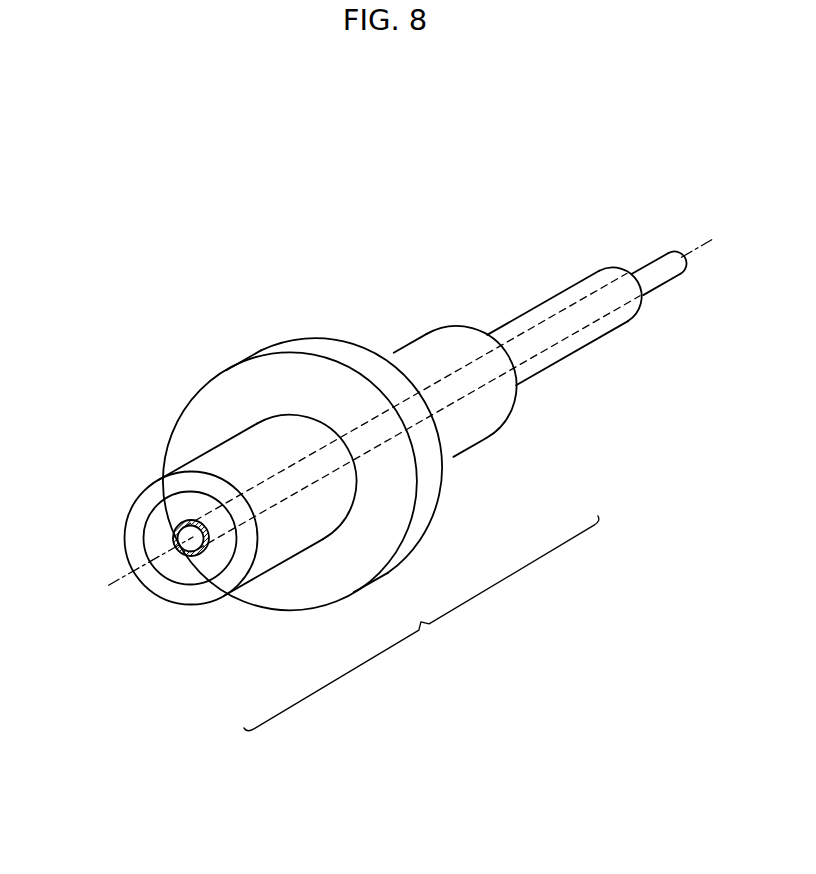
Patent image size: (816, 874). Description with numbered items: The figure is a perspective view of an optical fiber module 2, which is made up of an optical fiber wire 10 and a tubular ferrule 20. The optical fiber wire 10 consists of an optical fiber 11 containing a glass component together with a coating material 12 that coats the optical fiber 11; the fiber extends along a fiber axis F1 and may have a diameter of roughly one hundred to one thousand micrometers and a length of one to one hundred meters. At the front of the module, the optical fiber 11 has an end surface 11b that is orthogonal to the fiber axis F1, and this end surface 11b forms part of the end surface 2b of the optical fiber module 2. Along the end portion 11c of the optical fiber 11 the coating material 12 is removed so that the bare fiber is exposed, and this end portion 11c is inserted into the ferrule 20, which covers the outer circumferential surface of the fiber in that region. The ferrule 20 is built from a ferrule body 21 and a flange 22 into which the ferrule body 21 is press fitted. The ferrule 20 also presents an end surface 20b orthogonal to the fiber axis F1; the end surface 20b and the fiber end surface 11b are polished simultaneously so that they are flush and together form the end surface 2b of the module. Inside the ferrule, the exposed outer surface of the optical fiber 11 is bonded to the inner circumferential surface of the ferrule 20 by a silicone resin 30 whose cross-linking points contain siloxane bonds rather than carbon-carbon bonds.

The optical fiber module 2 is at (376, 138).
The end surface of optical fiber module 2b is at (153, 527).
The optical fiber wire 10 is at (556, 173).
The optical fiber 11 is at (647, 259).
The end surface of optical fiber 11b is at (173, 555).
The end portion of optical fiber 11c is at (421, 623).
The coating material 12 is at (570, 288).
The ferrule 20 is at (194, 256).
The end surface of ferrule 20b is at (177, 510).
The ferrule body 21 is at (237, 433).
The flange 22 is at (292, 337).
The silicone resin 30 is at (197, 557).
The fiber axis F1 is at (111, 580).